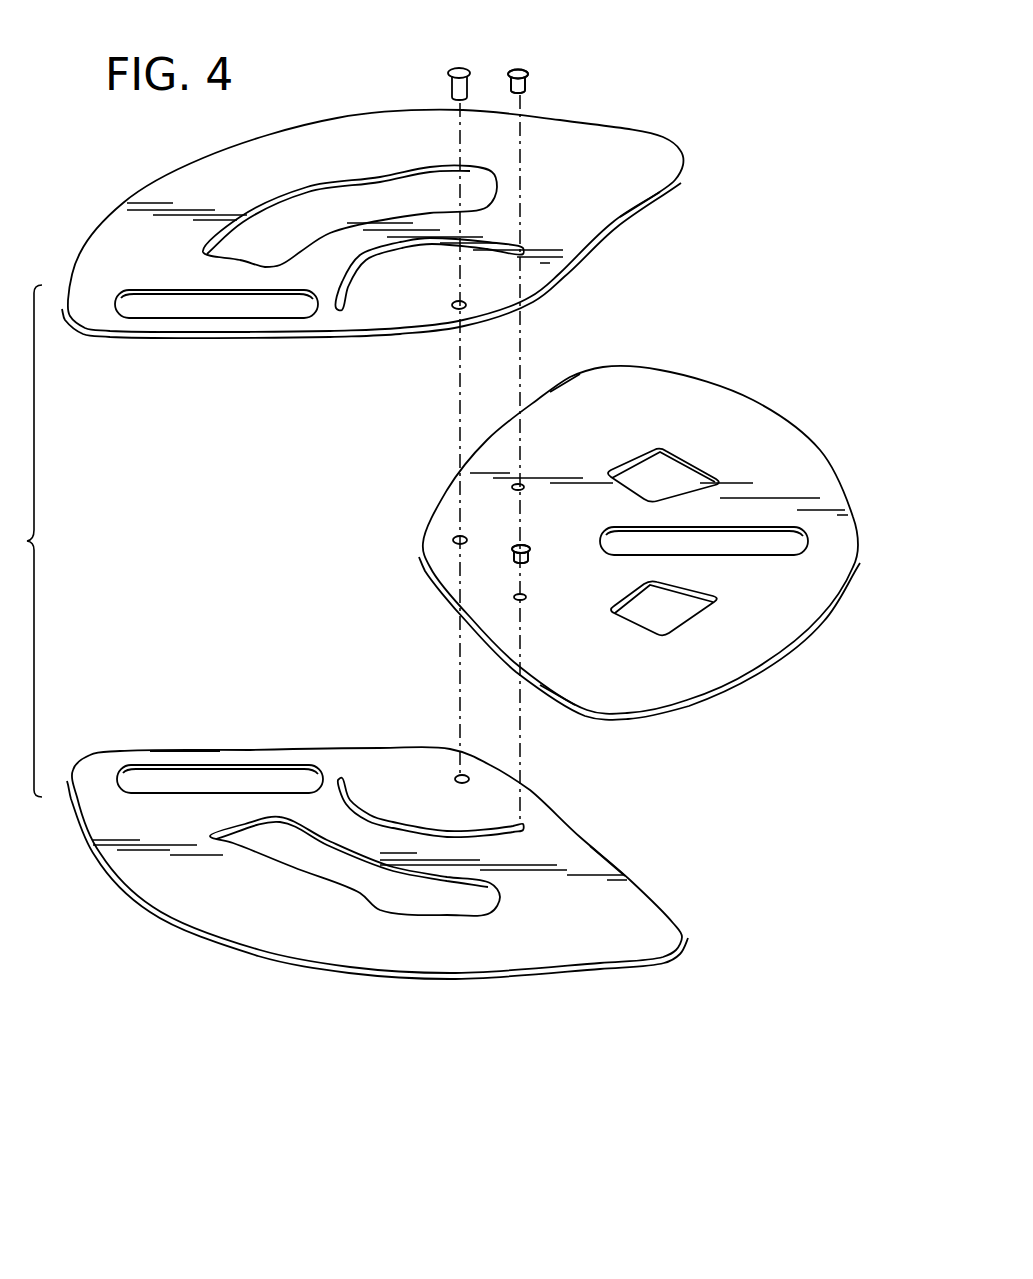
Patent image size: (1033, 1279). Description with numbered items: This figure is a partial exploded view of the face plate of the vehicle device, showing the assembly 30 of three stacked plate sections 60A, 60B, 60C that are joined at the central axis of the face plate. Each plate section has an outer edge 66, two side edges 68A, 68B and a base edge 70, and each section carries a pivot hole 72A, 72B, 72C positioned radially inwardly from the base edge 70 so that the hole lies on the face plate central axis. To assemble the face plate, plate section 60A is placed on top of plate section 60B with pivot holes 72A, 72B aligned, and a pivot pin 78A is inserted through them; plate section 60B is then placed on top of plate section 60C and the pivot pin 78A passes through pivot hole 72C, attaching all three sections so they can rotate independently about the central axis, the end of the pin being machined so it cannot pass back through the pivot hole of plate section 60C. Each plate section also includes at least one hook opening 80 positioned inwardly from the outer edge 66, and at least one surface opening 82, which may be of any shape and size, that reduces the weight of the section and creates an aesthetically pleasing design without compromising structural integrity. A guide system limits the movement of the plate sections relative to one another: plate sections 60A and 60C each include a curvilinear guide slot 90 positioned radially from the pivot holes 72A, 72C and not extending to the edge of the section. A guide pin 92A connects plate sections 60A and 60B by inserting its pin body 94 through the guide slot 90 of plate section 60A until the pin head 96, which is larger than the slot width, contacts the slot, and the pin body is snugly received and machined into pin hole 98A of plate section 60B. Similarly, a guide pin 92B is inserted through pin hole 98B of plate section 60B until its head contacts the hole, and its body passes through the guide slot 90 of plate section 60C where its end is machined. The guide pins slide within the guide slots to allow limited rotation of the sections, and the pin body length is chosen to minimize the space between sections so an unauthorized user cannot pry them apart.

The laminated brake pad assembly 30 is at (523, 1043).
The plate section 60A is at (627, 131).
The plate section 60B is at (772, 424).
The plate section 60C is at (382, 968).
The outer edge 66 is at (340, 115).
The side edge 68A is at (205, 333).
The side edge 68B is at (637, 207).
The base edge 70 is at (481, 327).
The pivot hole 72A is at (452, 310).
The pivot hole 72B is at (451, 537).
The pivot hole 72C is at (456, 775).
The pivot pin 78A is at (446, 68).
The hook opening 80 is at (165, 308).
The surface opening 82 is at (272, 215).
The guide slot 90 is at (336, 306).
The guide pin 92A is at (532, 68).
The guide pin 92B is at (532, 544).
The pin body 94 is at (530, 84).
The pin head 96 is at (510, 70).
The pin hole 98A is at (527, 486).
The pin hole 98B is at (527, 600).